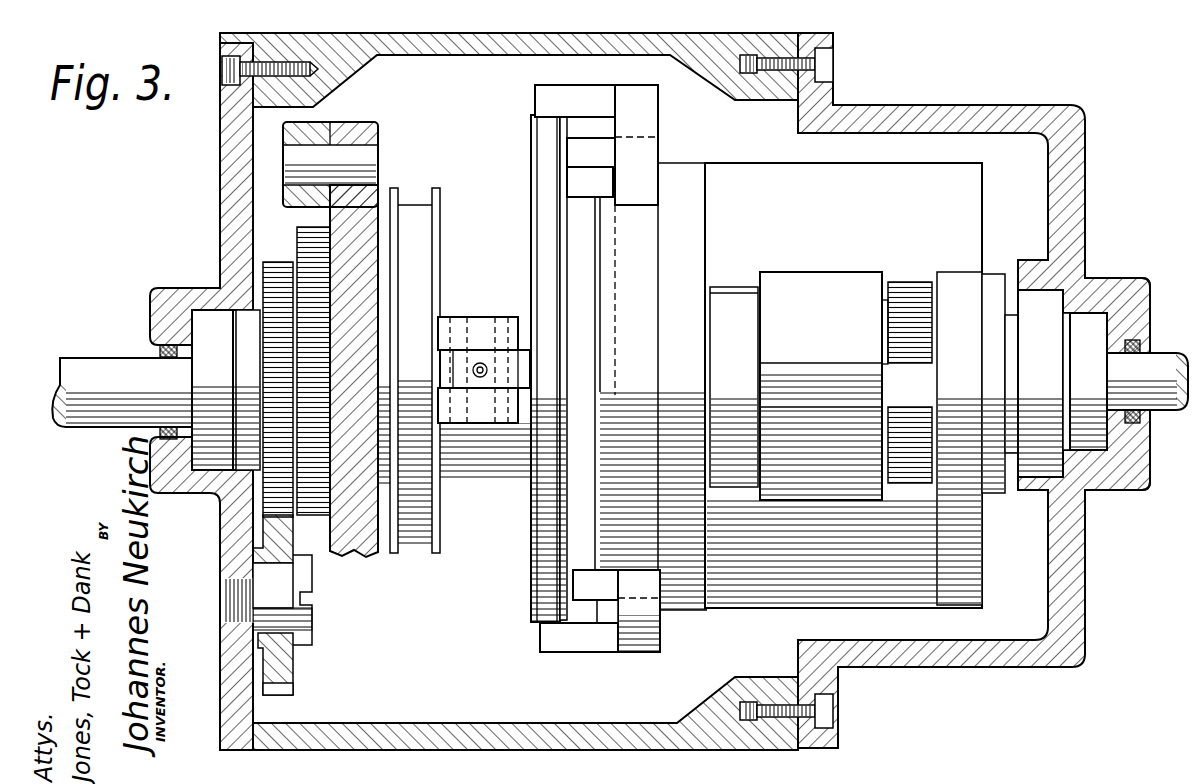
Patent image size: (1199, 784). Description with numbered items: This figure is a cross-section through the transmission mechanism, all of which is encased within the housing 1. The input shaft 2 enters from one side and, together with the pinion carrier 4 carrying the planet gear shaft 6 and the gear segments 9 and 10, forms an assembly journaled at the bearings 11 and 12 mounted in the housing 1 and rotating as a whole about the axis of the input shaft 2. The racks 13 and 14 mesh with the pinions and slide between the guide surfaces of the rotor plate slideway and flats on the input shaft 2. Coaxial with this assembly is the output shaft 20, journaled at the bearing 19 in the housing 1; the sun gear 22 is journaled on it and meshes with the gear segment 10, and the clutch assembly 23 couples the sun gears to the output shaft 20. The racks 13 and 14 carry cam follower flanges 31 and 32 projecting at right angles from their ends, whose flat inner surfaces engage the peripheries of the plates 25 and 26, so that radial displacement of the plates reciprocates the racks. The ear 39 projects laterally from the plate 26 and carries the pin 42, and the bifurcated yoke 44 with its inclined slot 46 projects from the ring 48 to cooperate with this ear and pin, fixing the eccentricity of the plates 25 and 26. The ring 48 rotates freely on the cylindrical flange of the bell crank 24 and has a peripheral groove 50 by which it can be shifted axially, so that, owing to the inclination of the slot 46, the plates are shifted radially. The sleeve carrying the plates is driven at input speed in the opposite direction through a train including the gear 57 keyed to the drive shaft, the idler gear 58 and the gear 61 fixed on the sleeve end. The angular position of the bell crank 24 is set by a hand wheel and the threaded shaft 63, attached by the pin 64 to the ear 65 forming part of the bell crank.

The housing 1 is at (1085, 190).
The input shaft 2 is at (97, 366).
The pinion carrier 4 is at (694, 172).
The planet gear shaft 6 is at (823, 375).
The gear segment 9 is at (738, 332).
The gear segment 10 is at (903, 287).
The bearing 11 is at (208, 310).
The bearing 12 is at (1090, 273).
The rack 13 is at (645, 162).
The rack 14 is at (648, 612).
The bearing 19 is at (1092, 440).
The output shaft 20 is at (1160, 367).
The sun gear 22 is at (893, 312).
The clutch assembly 23 is at (852, 270).
The bell crank 24 is at (373, 560).
The plate 25 is at (538, 545).
The plate 26 is at (583, 197).
The cam follower flange 31 is at (540, 93).
The cam follower flange 32 is at (580, 152).
The ear 39 is at (520, 380).
The pin 42 is at (498, 318).
The bifurcated yoke 44 is at (475, 322).
The inclined slot 46 is at (452, 318).
The ring 48 is at (432, 552).
The peripheral groove 50 is at (404, 552).
The gear 57 is at (275, 262).
The idler gear 58 is at (294, 664).
The gear 61 is at (322, 517).
The threaded shaft 63 is at (320, 124).
The pin 64 is at (370, 152).
The ear 65 is at (375, 197).